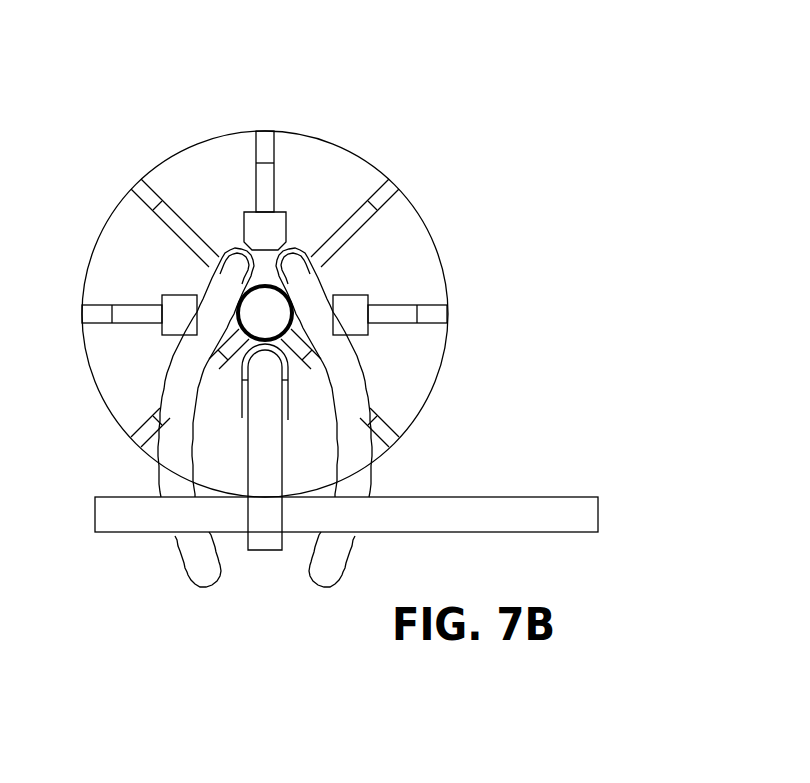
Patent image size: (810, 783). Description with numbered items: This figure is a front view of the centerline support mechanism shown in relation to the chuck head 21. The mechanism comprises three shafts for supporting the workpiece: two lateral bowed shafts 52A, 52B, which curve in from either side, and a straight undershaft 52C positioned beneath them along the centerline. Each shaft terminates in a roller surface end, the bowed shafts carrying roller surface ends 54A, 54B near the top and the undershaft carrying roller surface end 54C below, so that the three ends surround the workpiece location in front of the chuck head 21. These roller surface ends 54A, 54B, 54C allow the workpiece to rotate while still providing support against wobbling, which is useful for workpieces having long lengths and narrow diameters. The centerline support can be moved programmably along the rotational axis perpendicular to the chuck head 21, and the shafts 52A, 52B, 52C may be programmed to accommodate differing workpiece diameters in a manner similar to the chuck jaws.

The chuck head 21 is at (217, 172).
The lateral bowed shaft 52A is at (185, 365).
The lateral bowed shaft 52B is at (338, 360).
The straight undershaft 52C is at (264, 423).
The roller surface end 54A is at (218, 255).
The roller surface end 54B is at (305, 255).
The roller surface end 54C is at (243, 370).